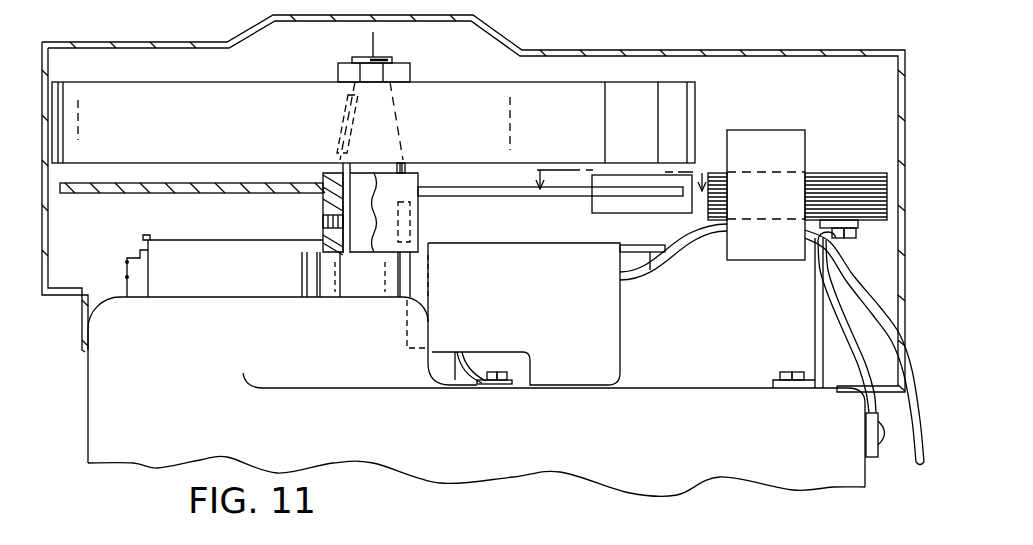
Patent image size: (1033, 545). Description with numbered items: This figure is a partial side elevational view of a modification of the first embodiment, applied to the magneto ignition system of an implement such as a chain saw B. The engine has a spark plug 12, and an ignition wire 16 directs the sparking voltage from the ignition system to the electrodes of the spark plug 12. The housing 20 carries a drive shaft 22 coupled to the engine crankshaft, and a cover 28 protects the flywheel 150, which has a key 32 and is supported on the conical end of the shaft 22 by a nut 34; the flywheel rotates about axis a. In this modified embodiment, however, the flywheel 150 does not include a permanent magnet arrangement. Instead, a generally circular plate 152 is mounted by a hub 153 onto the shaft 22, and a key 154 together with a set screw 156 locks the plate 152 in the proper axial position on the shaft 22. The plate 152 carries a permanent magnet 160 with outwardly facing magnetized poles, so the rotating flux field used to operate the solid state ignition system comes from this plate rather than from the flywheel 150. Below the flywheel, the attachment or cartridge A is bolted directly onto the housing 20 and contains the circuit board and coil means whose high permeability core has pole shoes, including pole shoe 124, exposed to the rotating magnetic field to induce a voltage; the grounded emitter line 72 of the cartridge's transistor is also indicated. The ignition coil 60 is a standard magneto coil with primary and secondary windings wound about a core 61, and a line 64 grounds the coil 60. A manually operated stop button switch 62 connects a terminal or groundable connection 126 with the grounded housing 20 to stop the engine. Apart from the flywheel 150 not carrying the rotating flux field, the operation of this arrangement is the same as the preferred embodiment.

The cover 28 is at (570, 50).
The flywheel 150 is at (698, 100).
The nut 34 is at (408, 72).
The axis a is at (374, 50).
The key 32 is at (343, 128).
The spark plug 12 is at (640, 160).
The set screw 156 is at (325, 223).
The hub 153 is at (420, 222).
The key 154 is at (410, 240).
The circular plate 152 is at (568, 199).
The permanent magnet 160 is at (664, 213).
The drive shaft 22 is at (405, 277).
The groundable connection 126 is at (155, 240).
The stop button switch 62 is at (131, 263).
The cartridge A is at (624, 333).
The emitter line 72 is at (480, 362).
The housing 20 is at (88, 432).
The chain saw B is at (843, 495).
The pole shoe 124 is at (650, 253).
The ignition coil 60 is at (811, 143).
The core 61 is at (843, 175).
The ignition wire 16 is at (912, 360).
The line 64 is at (868, 372).